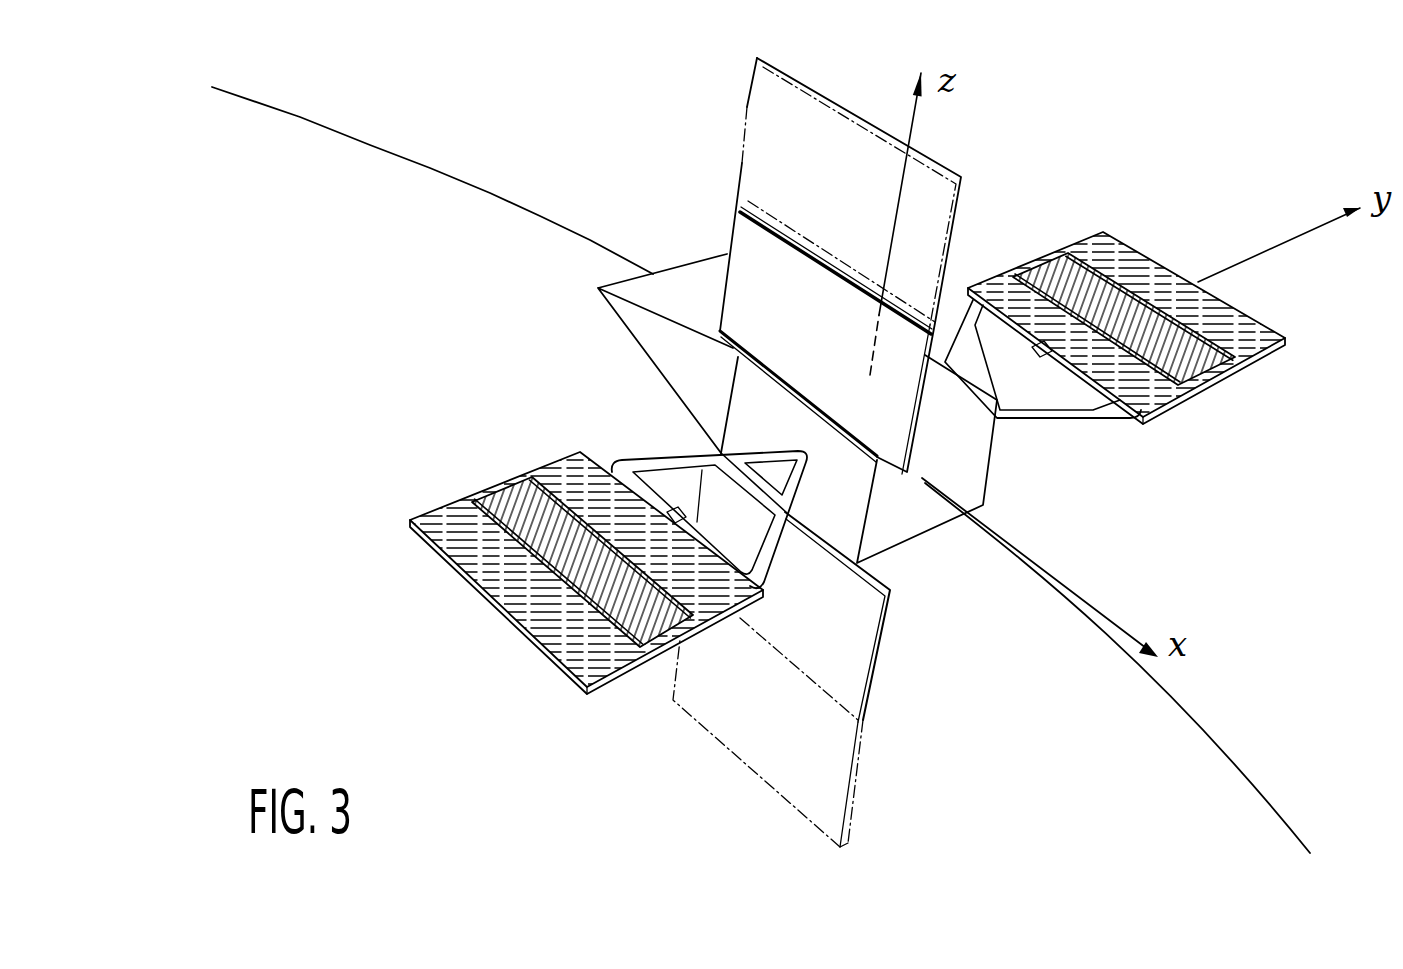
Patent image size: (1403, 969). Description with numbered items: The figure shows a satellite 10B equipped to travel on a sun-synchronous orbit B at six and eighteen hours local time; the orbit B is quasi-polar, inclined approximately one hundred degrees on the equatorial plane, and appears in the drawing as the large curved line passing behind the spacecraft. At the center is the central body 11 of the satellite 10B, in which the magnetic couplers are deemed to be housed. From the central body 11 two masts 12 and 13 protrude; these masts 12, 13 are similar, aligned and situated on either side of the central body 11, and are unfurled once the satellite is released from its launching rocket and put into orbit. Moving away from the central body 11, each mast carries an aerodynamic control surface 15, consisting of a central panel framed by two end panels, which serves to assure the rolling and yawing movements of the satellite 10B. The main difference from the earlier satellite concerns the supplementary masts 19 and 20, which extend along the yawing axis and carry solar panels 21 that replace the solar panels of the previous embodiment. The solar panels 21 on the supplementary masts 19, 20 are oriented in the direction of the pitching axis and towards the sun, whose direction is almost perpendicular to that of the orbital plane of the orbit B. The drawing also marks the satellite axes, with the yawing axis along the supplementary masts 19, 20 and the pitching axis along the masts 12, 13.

The orbit B is at (298, 117).
The satellite 10B is at (505, 314).
The central body 11 is at (688, 411).
The mast 12 is at (565, 440).
The mast 13 is at (1131, 434).
The aerodynamic control surface 15 is at (433, 501).
The supplementary mast 19 is at (890, 722).
The supplementary mast 20 is at (730, 154).
The solar panel 21 is at (742, 238).